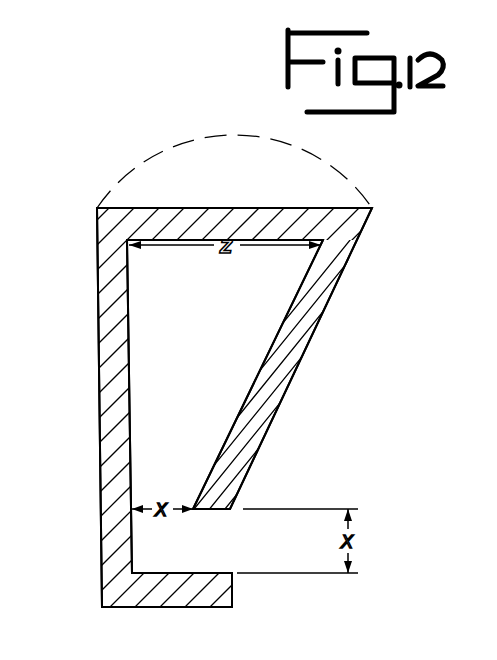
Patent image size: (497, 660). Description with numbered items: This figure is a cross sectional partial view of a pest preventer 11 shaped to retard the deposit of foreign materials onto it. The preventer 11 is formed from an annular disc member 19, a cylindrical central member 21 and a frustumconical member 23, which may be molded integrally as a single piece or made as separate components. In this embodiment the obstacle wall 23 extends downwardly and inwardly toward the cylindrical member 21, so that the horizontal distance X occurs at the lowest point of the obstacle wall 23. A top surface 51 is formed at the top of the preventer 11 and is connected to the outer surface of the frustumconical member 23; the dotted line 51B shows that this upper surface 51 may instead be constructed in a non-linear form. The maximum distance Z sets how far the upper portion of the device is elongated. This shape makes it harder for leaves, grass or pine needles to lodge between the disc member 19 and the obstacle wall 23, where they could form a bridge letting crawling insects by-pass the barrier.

The preventer 11 is at (62, 312).
The annular disc member 19 is at (168, 596).
The cylindrical central member 21 is at (110, 399).
The frustumconical member 23 is at (287, 377).
The top surface 51 is at (226, 208).
The dotted line 51B is at (185, 146).